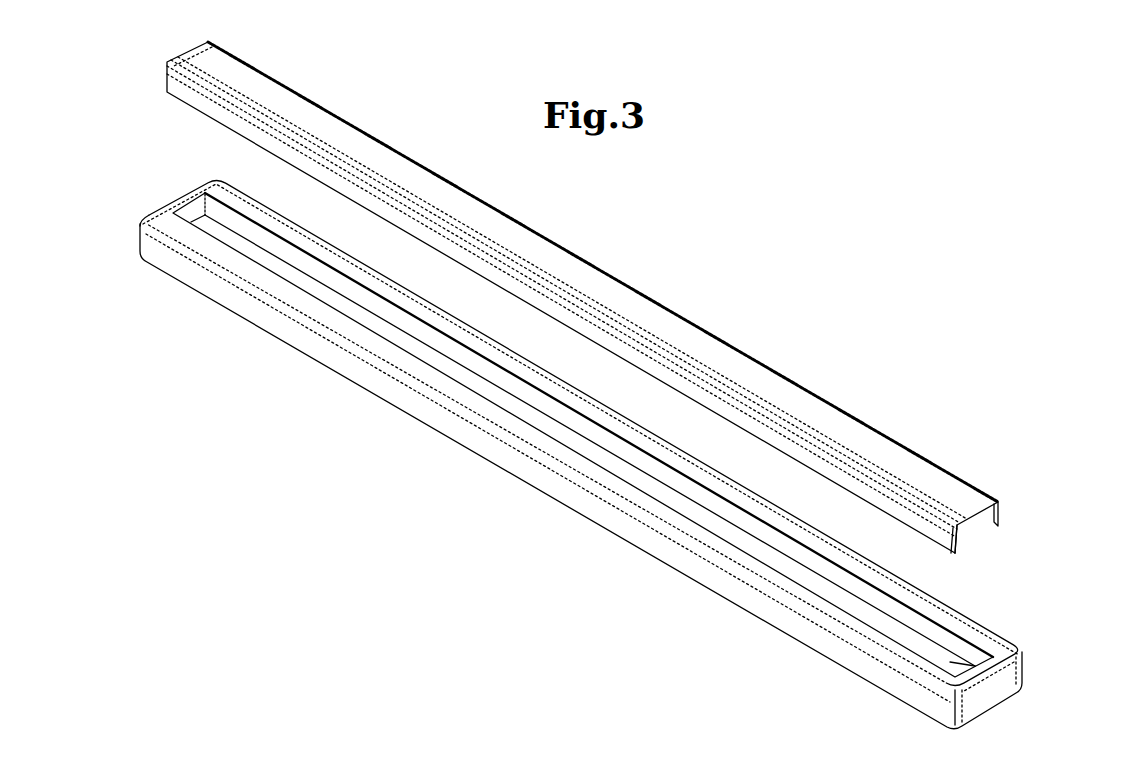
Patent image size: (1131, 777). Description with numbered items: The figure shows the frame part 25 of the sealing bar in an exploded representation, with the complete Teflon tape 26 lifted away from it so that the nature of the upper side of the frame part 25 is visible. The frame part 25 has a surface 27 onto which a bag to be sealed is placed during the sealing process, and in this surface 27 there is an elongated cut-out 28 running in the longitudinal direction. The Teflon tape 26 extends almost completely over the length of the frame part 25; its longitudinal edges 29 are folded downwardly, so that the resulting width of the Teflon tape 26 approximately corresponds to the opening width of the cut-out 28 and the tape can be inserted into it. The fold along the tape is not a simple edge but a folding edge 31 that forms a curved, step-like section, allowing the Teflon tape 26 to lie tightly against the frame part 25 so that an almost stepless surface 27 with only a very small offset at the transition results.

The frame part 25 is at (538, 480).
The Teflon tape 26 is at (765, 385).
The surface 27 is at (168, 223).
The cut-out 28 is at (968, 660).
The longitudinal edges 29 is at (993, 515).
The folding edge 31 is at (184, 74).